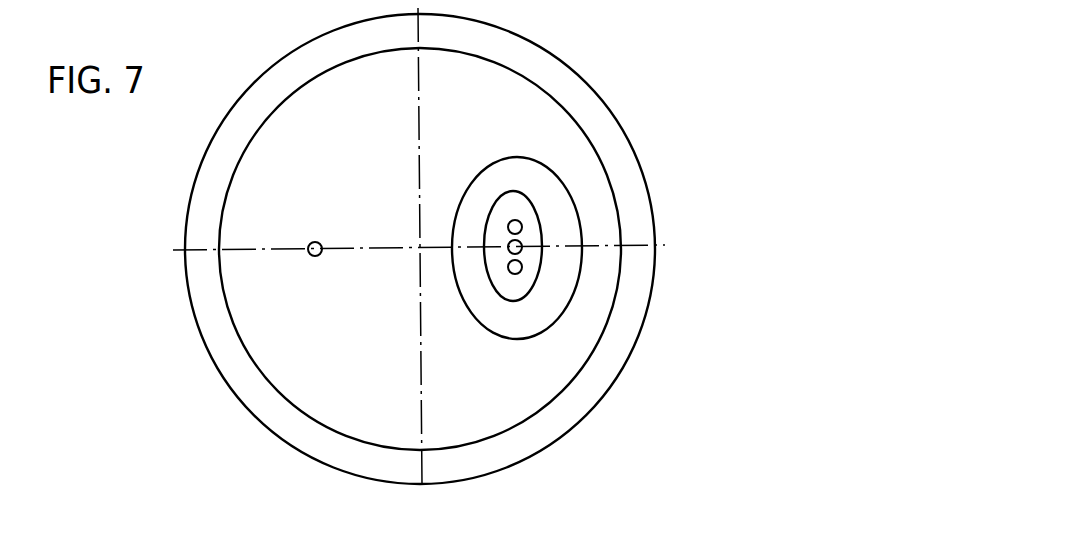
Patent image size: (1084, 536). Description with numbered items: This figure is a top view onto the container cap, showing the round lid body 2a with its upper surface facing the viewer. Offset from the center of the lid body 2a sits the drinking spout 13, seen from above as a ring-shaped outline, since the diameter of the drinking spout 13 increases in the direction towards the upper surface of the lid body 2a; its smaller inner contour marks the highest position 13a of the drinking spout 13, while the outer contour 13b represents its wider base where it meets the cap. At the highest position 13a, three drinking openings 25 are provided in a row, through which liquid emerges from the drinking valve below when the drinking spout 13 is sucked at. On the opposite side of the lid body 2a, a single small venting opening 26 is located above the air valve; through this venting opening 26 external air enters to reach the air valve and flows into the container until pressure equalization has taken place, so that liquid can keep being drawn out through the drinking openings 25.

The lid body 2a is at (300, 330).
The venting opening 26 is at (308, 253).
The drinking spout 13 is at (562, 170).
The highest position of the drinking spout 13a is at (528, 277).
The outer ring of flange 13b is at (547, 305).
The drinking openings 25 is at (523, 264).